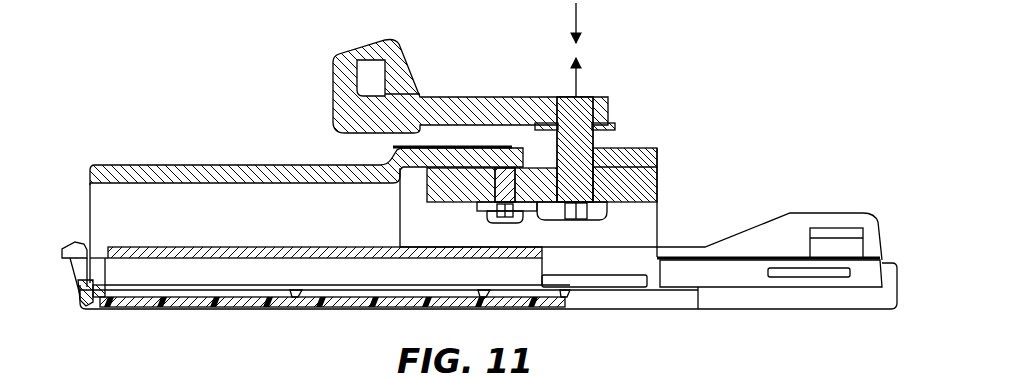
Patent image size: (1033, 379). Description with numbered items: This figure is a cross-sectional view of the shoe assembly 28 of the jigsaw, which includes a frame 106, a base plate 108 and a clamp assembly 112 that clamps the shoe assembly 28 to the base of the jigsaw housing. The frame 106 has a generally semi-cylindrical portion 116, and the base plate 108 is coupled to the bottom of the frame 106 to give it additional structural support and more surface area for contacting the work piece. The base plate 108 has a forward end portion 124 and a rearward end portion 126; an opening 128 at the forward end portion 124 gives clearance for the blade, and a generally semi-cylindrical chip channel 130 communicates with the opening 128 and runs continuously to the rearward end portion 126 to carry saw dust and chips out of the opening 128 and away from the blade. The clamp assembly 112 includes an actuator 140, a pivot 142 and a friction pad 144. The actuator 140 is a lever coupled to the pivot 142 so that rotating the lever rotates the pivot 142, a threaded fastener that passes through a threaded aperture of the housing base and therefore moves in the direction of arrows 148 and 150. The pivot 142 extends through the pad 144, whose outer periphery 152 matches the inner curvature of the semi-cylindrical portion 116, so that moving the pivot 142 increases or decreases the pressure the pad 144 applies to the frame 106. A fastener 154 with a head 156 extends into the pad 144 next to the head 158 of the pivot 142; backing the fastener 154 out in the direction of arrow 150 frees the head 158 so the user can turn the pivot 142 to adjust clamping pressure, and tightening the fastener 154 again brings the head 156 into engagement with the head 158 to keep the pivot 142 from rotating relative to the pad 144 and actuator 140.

The shoe assembly 28 is at (779, 115).
The frame 106 is at (486, 193).
The base plate 108 is at (757, 275).
The clamp assembly 112 is at (639, 118).
The semi-cylindrical portion 116 is at (245, 164).
The forward end portion 124 is at (868, 270).
The rearward end portion 126 is at (100, 278).
The opening 128 is at (718, 290).
The chip channel 130 is at (247, 268).
The actuator 140 is at (450, 106).
The pivot 142 is at (593, 135).
The friction pad 144 is at (660, 183).
The arrow 148 is at (577, 78).
The arrow 150 is at (577, 22).
The outer periphery 152 is at (463, 165).
The fastener 154 is at (492, 188).
The head 156 is at (522, 223).
The head 158 is at (593, 216).